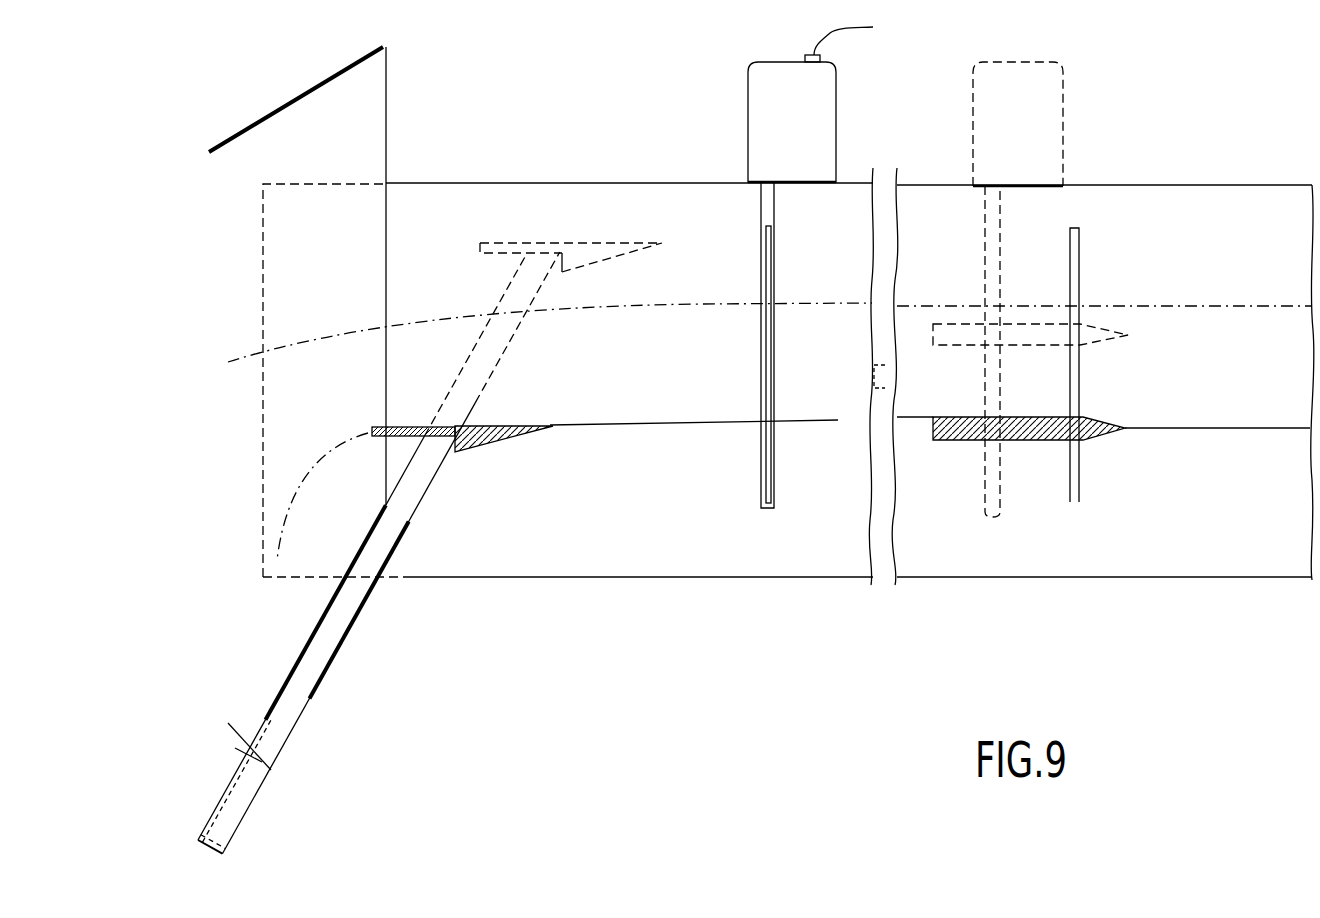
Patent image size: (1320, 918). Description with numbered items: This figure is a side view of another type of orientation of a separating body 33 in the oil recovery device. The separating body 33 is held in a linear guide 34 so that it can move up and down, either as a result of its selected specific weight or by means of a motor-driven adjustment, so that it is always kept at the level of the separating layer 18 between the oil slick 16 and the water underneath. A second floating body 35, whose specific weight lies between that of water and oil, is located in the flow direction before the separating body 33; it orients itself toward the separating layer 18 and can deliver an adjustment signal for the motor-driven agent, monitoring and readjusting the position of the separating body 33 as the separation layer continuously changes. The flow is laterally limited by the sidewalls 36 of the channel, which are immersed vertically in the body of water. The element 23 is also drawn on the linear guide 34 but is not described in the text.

The oil slick 16 is at (708, 365).
The separating layer 18 is at (594, 425).
The marking on arm 23 is at (271, 770).
The separating body 33 is at (580, 253).
The linear guide 34 is at (318, 687).
The second floating body 35 is at (1017, 430).
The sidewalls 36 is at (1161, 185).